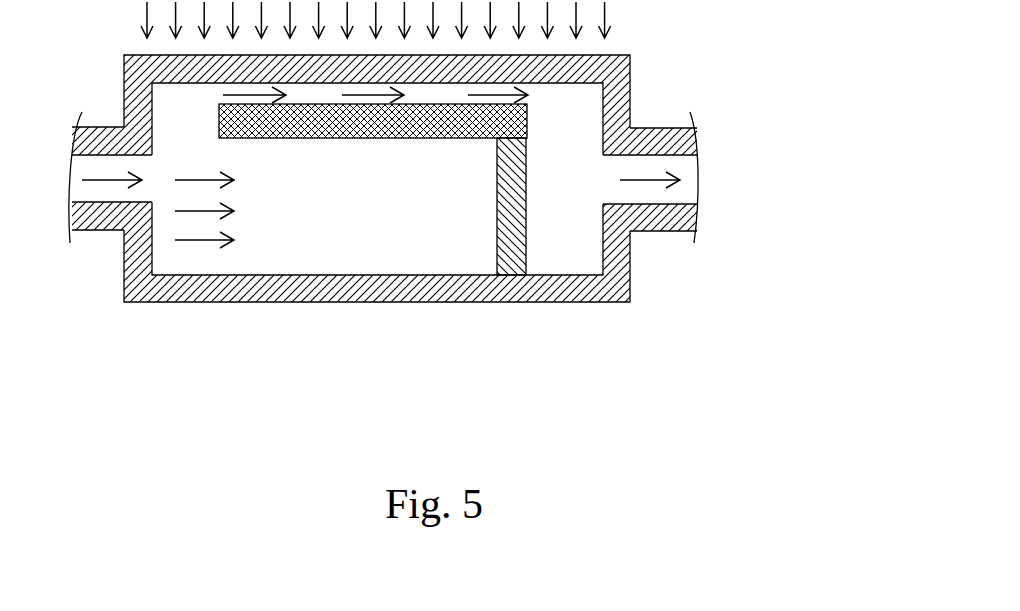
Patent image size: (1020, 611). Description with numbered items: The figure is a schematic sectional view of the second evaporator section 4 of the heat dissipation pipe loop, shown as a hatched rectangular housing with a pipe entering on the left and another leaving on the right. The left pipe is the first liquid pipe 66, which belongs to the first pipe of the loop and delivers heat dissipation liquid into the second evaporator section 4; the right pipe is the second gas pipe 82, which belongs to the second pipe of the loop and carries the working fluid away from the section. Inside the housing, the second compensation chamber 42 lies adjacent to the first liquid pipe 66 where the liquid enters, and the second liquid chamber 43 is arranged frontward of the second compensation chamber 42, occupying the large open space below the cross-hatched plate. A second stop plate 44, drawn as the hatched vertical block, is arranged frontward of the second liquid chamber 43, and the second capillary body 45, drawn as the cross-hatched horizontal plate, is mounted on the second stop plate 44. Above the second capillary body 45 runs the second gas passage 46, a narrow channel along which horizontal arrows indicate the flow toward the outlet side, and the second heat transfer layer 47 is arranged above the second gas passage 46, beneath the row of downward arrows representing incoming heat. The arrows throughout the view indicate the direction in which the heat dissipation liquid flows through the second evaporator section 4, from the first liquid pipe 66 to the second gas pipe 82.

The second evaporator section 4 is at (600, 283).
The second compensation chamber 42 is at (158, 158).
The second liquid chamber 43 is at (363, 185).
The second stop plate 44 is at (512, 200).
The second capillary body 45 is at (250, 117).
The second gas passage 46 is at (311, 95).
The second heat transfer layer 47 is at (572, 67).
The first liquid pipe 66 is at (100, 143).
The second gas pipe 82 is at (662, 130).